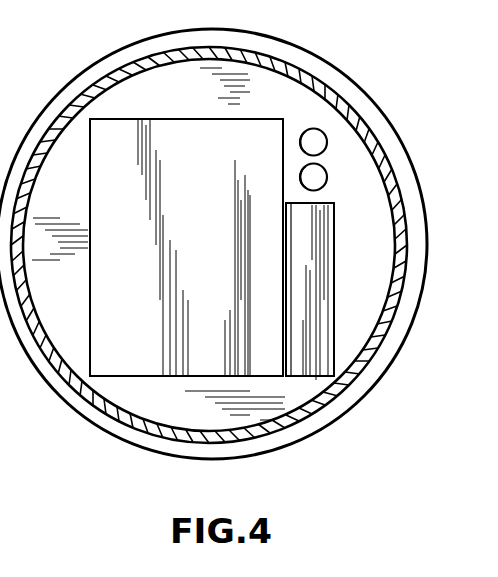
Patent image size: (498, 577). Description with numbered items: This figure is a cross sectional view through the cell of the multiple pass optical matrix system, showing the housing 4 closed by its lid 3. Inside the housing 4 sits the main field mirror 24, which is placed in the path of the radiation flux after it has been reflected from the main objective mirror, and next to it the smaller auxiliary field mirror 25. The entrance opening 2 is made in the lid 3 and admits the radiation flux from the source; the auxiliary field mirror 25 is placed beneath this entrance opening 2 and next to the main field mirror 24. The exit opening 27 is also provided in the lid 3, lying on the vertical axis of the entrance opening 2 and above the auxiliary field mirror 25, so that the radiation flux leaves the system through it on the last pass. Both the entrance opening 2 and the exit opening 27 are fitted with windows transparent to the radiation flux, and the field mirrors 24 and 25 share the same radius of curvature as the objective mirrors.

The lid 3 is at (307, 58).
The housing 4 is at (394, 185).
The entrance opening 2 is at (304, 129).
The exit opening 27 is at (322, 179).
The main field mirror 24 is at (177, 130).
The auxiliary field mirror 25 is at (331, 276).